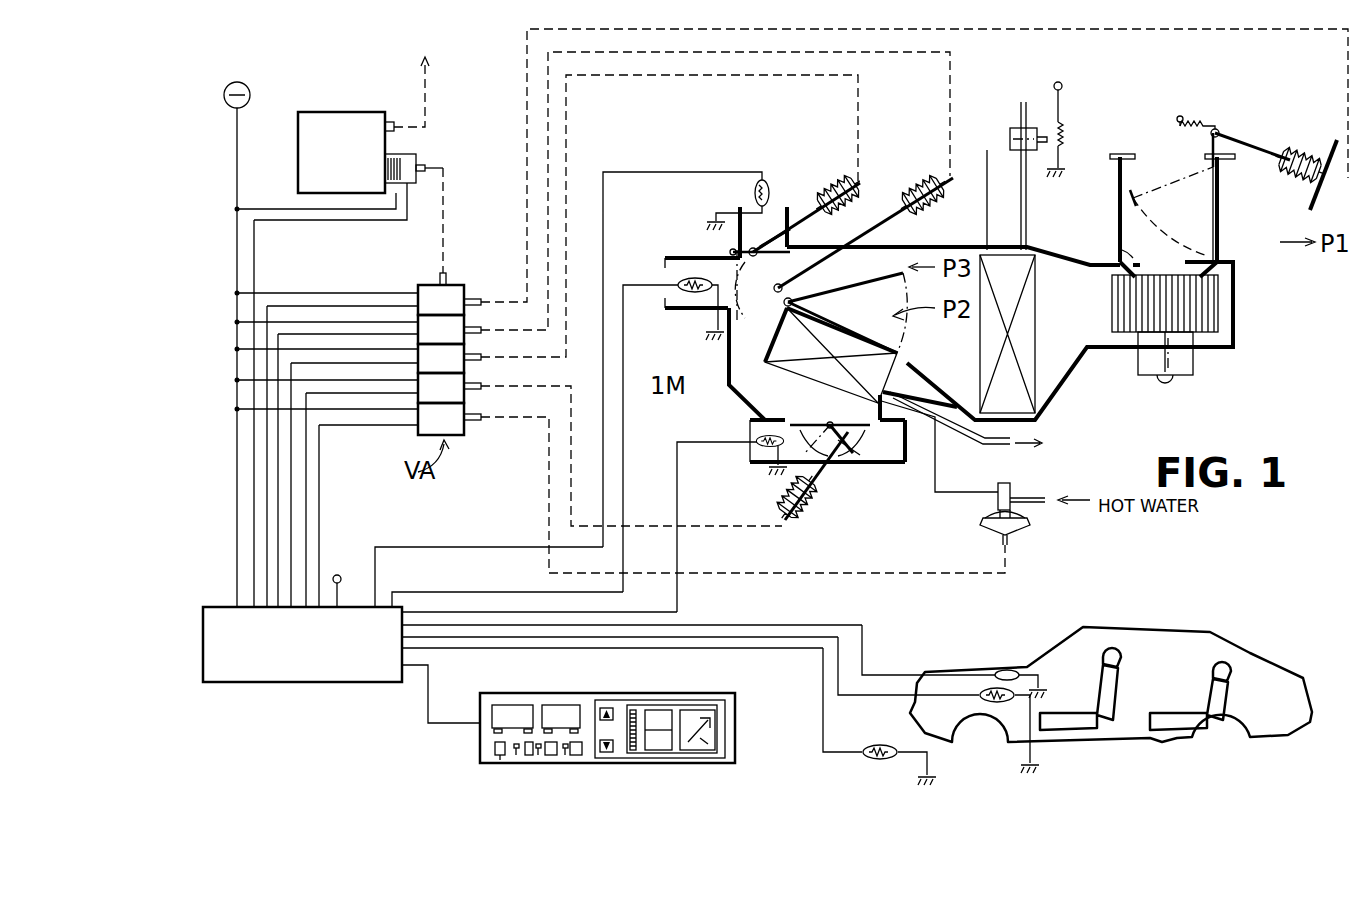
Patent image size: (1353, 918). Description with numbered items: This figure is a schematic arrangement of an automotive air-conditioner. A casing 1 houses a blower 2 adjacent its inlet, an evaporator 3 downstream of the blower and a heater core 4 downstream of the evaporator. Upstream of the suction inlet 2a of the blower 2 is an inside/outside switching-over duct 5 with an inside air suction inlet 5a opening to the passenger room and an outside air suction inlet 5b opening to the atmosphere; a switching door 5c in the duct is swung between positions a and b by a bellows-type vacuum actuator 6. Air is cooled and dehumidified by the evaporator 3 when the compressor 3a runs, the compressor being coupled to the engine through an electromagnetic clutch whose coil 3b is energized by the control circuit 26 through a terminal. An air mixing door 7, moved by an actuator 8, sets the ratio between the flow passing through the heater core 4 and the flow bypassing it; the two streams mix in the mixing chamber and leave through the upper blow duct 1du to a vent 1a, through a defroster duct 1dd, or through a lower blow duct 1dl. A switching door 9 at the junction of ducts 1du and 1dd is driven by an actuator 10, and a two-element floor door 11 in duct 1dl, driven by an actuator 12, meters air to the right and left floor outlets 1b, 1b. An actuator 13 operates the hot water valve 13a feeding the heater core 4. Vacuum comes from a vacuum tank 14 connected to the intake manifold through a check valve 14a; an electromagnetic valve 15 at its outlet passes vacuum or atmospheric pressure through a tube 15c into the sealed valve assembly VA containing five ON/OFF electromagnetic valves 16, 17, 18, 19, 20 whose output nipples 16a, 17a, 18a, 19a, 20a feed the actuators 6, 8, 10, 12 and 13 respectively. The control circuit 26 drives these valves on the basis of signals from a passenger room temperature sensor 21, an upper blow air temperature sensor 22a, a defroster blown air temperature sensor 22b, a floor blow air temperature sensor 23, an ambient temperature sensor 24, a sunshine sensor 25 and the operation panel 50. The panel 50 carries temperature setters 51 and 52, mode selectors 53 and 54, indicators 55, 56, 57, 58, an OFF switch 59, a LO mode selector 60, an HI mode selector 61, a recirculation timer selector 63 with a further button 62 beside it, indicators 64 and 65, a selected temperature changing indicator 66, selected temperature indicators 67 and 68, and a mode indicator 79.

The casing 1 is at (1072, 378).
The vent 1a is at (665, 268).
The floor outlets 1b is at (748, 445).
The defroster duct 1dd is at (790, 215).
The lower blow duct 1dl is at (828, 422).
The upper blow duct 1du is at (730, 250).
The blower 2 is at (1193, 368).
The suction inlet 2a is at (1132, 250).
The evaporator 3 is at (1032, 345).
The compressor 3a is at (1010, 130).
The coil of electromagnetic clutch 3b is at (1063, 138).
The heater core 4 is at (772, 362).
The inside/outside switching-over duct 5 is at (1118, 190).
The inside air suction inlet 5a is at (1228, 258).
The outside air suction inlet 5b is at (1157, 160).
The switching door 5c is at (1217, 202).
The vacuum actuator 6 is at (1315, 162).
The air mixing door 7 is at (905, 262).
The actuator 8 is at (921, 182).
The switching door 9 is at (794, 226).
The actuator 10 is at (836, 182).
The floor door 11 is at (838, 455).
The actuator 12 is at (808, 510).
The actuator 13 is at (1020, 535).
The hot water valve 13a is at (1010, 488).
The vacuum tank 14 is at (300, 118).
The check valve 14a is at (386, 118).
The electromagnetic valve 15 is at (418, 160).
The tube 15c is at (443, 200).
The ON/OFF electromagnetic valve 16 is at (350, 446).
The output nipple 16a is at (474, 299).
The ON/OFF electromagnetic valve 17 is at (350, 461).
The output nipple 17a is at (476, 330).
The ON/OFF electromagnetic valve 18 is at (350, 475).
The output nipple 18a is at (480, 357).
The ON/OFF electromagnetic valve 19 is at (350, 490).
The output nipple 19a is at (486, 388).
The ON/OFF electromagnetic valve 20 is at (350, 505).
The output nipple 20a is at (484, 419).
The passenger room temperature sensor 21 is at (980, 688).
The upper blow air temperature sensor 22a is at (708, 302).
The defroster blown air temperature sensor 22b is at (754, 192).
The floor blow air temperature sensor 23 is at (752, 413).
The ambient temperature sensor 24 is at (885, 745).
The sunshine sensor 25 is at (1008, 670).
The control circuit 26 is at (250, 684).
The operation panel 50 is at (752, 704).
The temperature setter 51 is at (613, 705).
The temperature setter 52 is at (612, 748).
The mode selector (AUTO) 53 is at (483, 700).
The mode selector 54 is at (558, 705).
The indicator 55 is at (492, 731).
The indicator 56 is at (510, 705).
The indicator 57 is at (550, 730).
The indicator 58 is at (576, 730).
The OFF switch 59 is at (495, 748).
The LO mode selector 60 is at (515, 752).
The HI mode selector 61 is at (540, 752).
The switch 62 is at (557, 752).
The recirculation timer mode selector 63 is at (500, 757).
The indicator 64 is at (530, 756).
The indicator 65 is at (566, 750).
The selected temperature changing indicator 66 is at (656, 735).
The selected temperature indicator 67 is at (670, 716).
The selected temperature indicator / ambient temperature indicator 68 is at (692, 742).
The mode indicator 79 is at (710, 740).